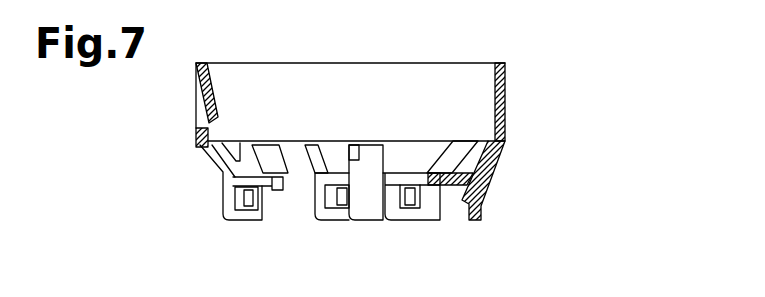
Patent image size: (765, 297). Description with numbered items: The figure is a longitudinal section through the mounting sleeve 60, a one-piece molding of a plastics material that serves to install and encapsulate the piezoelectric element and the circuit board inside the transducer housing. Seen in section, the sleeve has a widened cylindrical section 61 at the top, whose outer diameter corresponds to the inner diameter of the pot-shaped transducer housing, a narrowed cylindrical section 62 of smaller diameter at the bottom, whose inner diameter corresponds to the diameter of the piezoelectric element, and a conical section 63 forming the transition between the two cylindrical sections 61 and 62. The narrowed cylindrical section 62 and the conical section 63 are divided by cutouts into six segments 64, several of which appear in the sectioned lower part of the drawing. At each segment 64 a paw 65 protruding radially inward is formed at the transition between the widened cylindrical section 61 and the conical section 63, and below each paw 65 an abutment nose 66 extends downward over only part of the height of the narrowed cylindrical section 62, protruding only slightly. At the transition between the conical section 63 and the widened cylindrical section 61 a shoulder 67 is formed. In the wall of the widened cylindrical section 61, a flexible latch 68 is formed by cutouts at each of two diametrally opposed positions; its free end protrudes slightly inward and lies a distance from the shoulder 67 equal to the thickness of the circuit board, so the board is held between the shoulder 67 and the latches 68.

The mounting sleeve 60 is at (536, 116).
The widened cylindrical section 61 is at (506, 75).
The narrowed cylindrical section 62 is at (484, 194).
The conical section 63 is at (497, 164).
The segment 64 is at (255, 220).
The paw 65 is at (270, 172).
The abutment nose 66 is at (235, 197).
The shoulder 67 is at (487, 138).
The flexible latch 68 is at (223, 70).